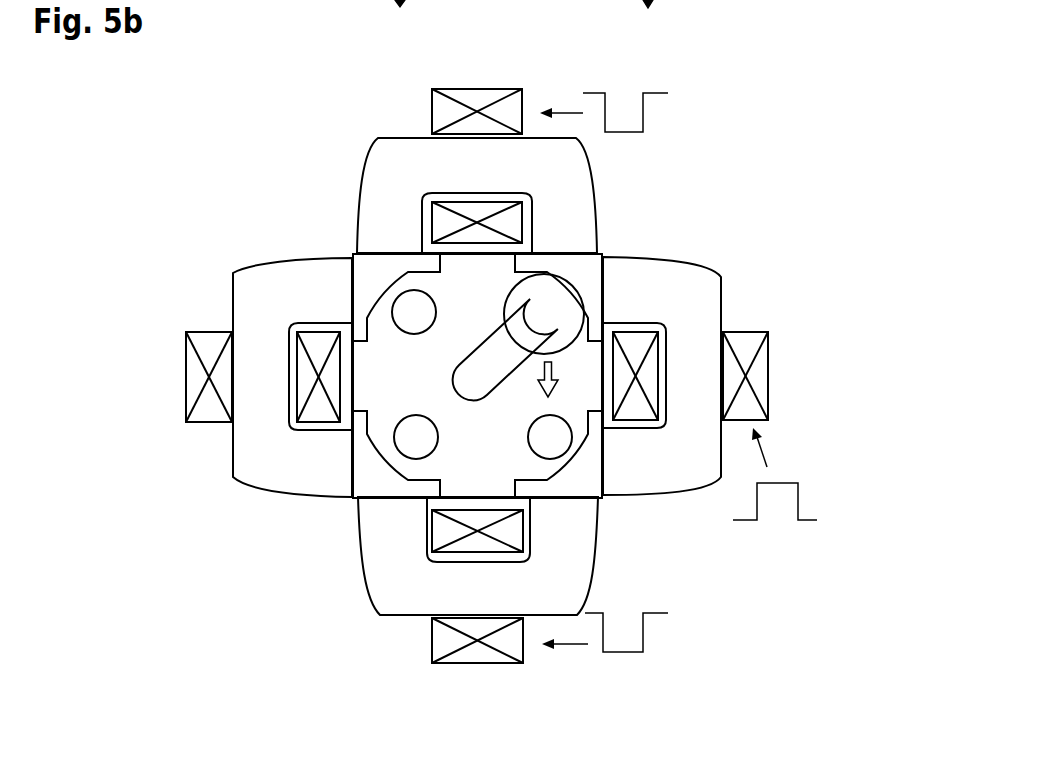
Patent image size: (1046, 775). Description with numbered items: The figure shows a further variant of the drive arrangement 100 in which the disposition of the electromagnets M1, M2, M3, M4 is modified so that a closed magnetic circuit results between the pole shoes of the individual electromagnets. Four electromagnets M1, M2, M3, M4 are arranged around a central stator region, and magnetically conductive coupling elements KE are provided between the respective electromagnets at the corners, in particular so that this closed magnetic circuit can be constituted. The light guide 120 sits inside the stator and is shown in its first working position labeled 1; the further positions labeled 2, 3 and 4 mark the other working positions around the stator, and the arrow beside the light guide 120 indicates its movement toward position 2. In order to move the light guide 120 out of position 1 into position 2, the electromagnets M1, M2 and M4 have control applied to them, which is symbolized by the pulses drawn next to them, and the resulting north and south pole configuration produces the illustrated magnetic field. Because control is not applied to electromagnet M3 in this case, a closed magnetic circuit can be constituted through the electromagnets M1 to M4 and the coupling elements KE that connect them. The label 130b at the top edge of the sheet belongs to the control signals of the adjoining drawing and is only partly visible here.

The electric stepping drive 100 is at (338, 118).
The light guide 120 is at (517, 337).
The control signal 130b is at (778, 0).
The electromagnet M1 is at (697, 280).
The electromagnet M2 is at (582, 558).
The electromagnet M3 is at (257, 472).
The electromagnet M4 is at (382, 157).
The magnetically conductive coupling element KE is at (353, 253).
The first working position 1 is at (544, 314).
The second working position 2 is at (550, 437).
The rotor position 3 is at (416, 437).
The rotor position 4 is at (414, 312).